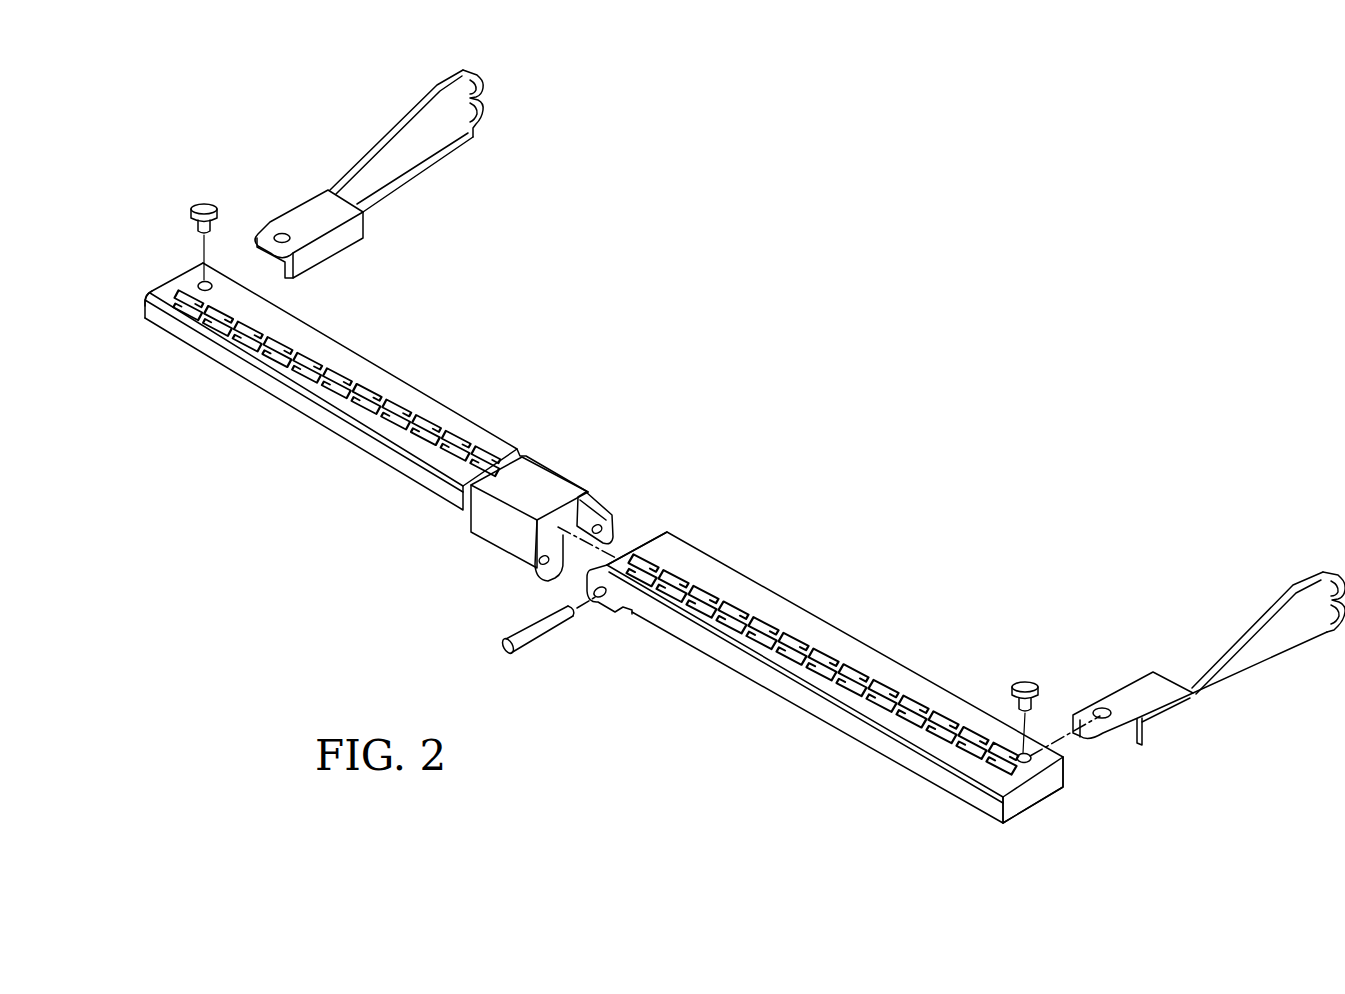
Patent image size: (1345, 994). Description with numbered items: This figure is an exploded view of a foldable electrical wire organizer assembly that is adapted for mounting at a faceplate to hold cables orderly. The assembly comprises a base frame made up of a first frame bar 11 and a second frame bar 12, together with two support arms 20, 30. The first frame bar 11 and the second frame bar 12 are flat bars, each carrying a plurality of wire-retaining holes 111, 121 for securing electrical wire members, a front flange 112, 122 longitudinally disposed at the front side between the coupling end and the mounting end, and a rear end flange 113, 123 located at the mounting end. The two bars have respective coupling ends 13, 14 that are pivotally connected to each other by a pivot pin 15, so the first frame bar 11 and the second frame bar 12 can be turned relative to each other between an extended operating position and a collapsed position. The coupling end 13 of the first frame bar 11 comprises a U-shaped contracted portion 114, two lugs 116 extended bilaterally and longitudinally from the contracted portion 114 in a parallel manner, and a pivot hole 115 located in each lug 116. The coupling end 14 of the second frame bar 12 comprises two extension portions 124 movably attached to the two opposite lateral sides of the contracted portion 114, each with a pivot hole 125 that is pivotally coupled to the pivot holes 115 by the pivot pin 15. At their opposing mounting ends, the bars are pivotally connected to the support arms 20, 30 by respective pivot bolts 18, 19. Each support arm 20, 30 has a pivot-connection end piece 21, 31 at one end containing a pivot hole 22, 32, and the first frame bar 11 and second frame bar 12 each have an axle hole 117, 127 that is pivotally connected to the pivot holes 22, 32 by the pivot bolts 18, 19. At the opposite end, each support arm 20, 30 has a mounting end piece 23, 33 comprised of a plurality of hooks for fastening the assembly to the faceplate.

The first frame bar 11 is at (390, 385).
The second frame bar 12 is at (870, 648).
The coupling end 13 is at (578, 498).
The coupling end 14 is at (628, 540).
The pivot pin 15 is at (530, 660).
The pivot bolt 18 is at (206, 203).
The pivot bolt 19 is at (1032, 680).
The support arm 20 is at (414, 187).
The pivot-connection end piece 21 is at (338, 220).
The pivot hole 22 is at (282, 233).
The mounting end piece 23 is at (481, 88).
The support arm 30 is at (1209, 657).
The pivot-connection end piece 31 is at (1140, 690).
The pivot hole 32 is at (1108, 718).
The mounting end piece 33 is at (1340, 580).
The wire-retaining holes 111 is at (370, 413).
The front flange 112 is at (245, 372).
The rear end flange 113 is at (133, 303).
The contracted portion 114 is at (500, 528).
The pivot hole 115 is at (541, 566).
The lugs 116 is at (520, 540).
The axle hole 117 is at (203, 280).
The wire-retaining holes 121 is at (872, 723).
The front flange 122 is at (745, 670).
The rear end flange 123 is at (1045, 795).
The extension portions 124 is at (612, 608).
The pivot hole 125 is at (597, 600).
The axle hole 127 is at (1033, 764).